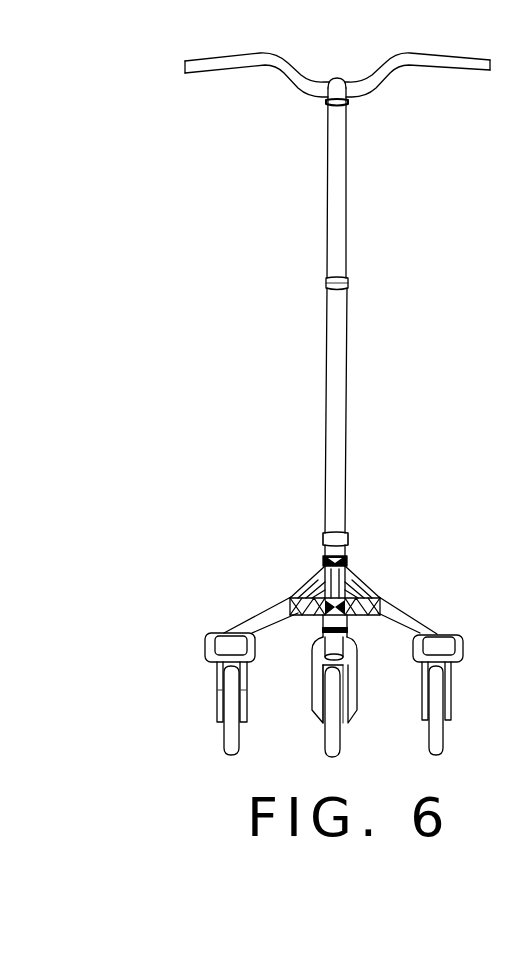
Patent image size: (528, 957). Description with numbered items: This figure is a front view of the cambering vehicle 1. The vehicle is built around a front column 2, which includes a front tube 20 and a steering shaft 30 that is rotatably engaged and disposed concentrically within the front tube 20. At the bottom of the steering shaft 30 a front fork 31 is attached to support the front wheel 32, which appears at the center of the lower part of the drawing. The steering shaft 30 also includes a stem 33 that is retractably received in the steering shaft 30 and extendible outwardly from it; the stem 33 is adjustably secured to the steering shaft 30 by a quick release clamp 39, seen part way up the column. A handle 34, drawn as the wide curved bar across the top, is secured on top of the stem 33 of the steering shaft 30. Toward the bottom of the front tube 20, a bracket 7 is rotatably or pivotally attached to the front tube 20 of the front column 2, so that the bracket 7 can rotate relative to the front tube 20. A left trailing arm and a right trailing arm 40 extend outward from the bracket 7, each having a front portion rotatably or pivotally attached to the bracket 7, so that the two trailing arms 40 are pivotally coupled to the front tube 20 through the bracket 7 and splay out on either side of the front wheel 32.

The cambering vehicle 1 is at (186, 227).
The front column 2 is at (368, 533).
The bracket 7 is at (323, 570).
The front tube 20 is at (343, 540).
The steering shaft 30 is at (337, 377).
The front fork 31 is at (300, 667).
The front wheel 32 is at (335, 748).
The stem 33 is at (340, 203).
The handle 34 is at (462, 65).
The quick release clamp 39 is at (341, 279).
The trailing arm 40 is at (248, 620).